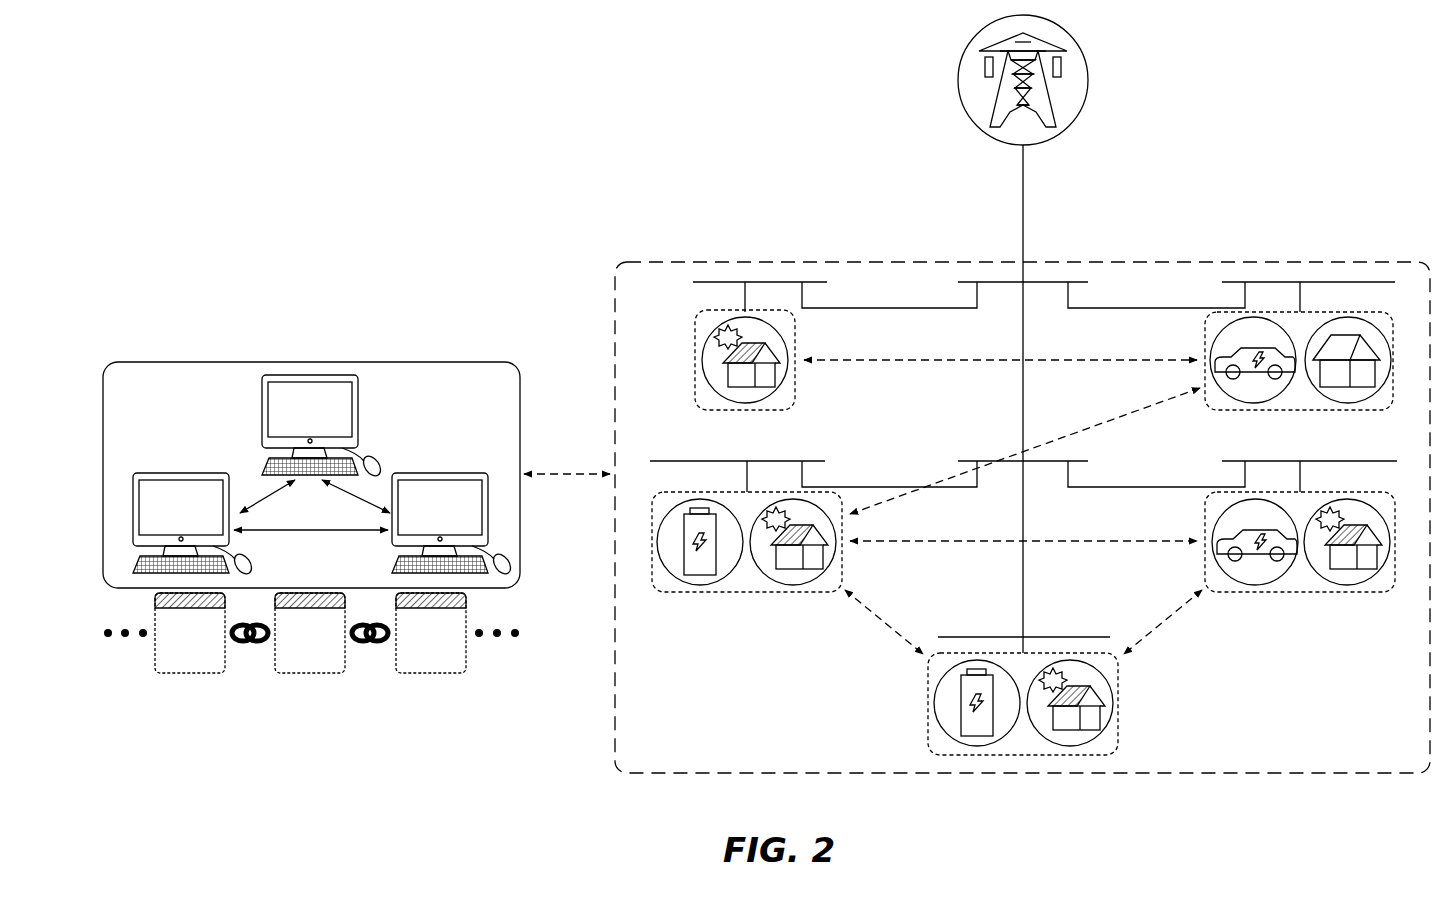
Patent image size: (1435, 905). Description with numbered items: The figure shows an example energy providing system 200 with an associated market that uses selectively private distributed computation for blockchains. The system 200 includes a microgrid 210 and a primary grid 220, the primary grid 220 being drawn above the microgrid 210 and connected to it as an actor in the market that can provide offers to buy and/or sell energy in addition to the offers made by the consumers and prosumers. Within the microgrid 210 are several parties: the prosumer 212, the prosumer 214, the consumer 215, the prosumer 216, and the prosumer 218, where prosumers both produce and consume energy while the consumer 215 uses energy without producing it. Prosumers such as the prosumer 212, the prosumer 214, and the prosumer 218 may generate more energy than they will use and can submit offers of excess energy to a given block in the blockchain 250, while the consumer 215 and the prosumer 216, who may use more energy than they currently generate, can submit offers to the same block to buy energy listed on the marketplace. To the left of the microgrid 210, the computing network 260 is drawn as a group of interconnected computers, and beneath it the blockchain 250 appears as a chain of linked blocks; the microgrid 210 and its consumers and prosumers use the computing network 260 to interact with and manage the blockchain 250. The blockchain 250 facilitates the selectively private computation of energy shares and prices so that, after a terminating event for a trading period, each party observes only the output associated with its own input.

The energy providing system 200 is at (378, 100).
The microgrid 210 is at (1232, 262).
The prosumer 212 is at (796, 386).
The prosumer 214 is at (843, 568).
The consumer 215 is at (1204, 409).
The prosumer 216 is at (1205, 568).
The prosumer 218 is at (1118, 705).
The primary grid 220 is at (1088, 78).
The blockchain 250 is at (310, 673).
The computing network 260 is at (312, 362).